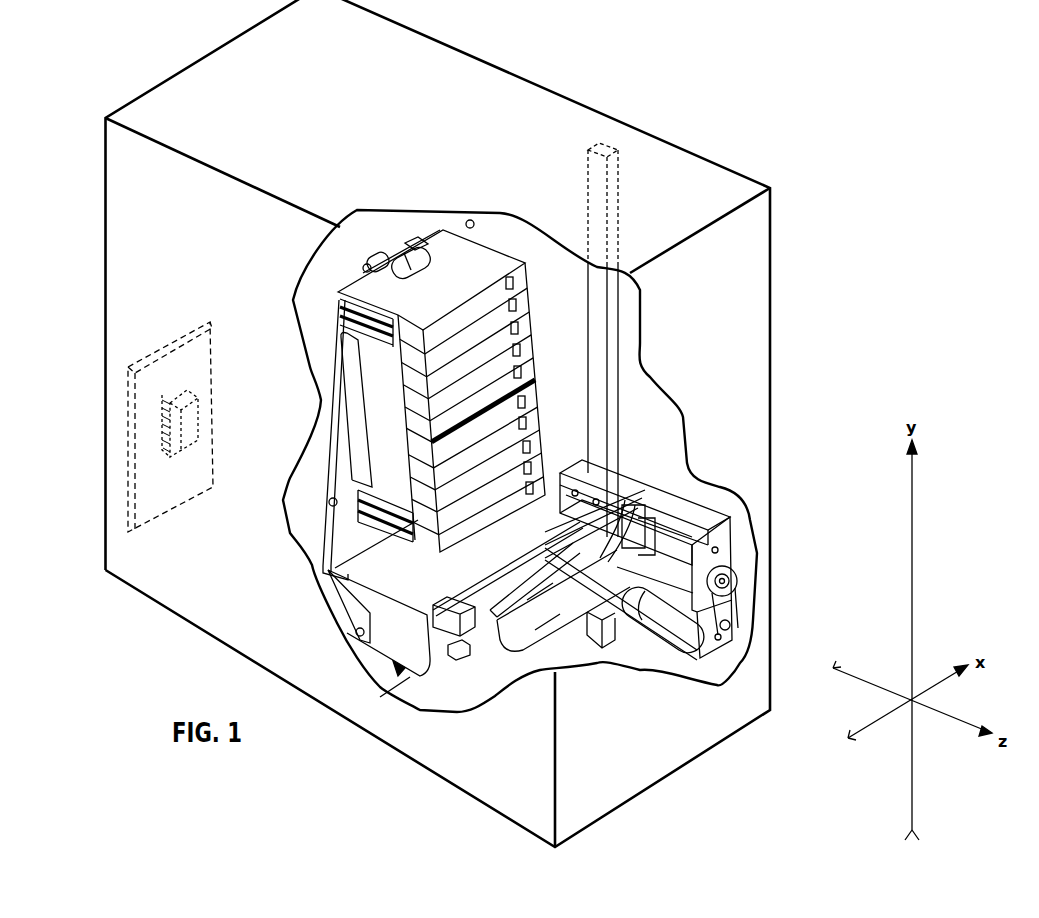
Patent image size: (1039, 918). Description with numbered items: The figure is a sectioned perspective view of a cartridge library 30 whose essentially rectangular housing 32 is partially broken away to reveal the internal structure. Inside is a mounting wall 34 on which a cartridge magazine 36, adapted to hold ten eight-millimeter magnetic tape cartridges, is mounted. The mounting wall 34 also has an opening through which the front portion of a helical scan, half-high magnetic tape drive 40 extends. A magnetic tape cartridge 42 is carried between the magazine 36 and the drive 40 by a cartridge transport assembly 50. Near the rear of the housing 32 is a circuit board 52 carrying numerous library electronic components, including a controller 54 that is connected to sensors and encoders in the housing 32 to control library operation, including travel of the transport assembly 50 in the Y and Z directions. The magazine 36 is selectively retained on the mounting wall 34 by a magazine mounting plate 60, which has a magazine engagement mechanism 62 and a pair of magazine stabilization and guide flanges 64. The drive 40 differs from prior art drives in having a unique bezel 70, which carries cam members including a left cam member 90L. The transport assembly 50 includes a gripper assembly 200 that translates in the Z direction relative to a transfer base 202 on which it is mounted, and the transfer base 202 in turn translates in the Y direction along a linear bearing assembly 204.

The cartridge library 30 is at (858, 136).
The housing 32 is at (481, 59).
The mounting wall 34 is at (335, 460).
The cartridge magazine 36 is at (461, 245).
The magnetic tape drive 40 is at (391, 637).
The magnetic tape cartridge 42 is at (520, 578).
The cartridge transport assembly 50 is at (540, 660).
The circuit board 52 is at (207, 343).
The controller 54 is at (187, 425).
The magazine mounting plate 60 is at (370, 265).
The magazine engagement mechanism 62 is at (423, 282).
The magazine stabilization and guide flanges 64 is at (348, 400).
The bezel 70 is at (462, 600).
The left cam member 90L is at (458, 650).
The gripper assembly 200 is at (563, 623).
The transfer base 202 is at (640, 492).
The linear bearing assembly 204 is at (607, 367).